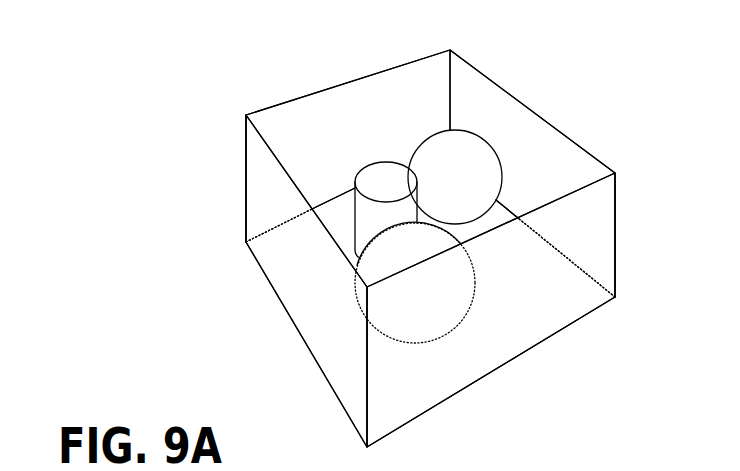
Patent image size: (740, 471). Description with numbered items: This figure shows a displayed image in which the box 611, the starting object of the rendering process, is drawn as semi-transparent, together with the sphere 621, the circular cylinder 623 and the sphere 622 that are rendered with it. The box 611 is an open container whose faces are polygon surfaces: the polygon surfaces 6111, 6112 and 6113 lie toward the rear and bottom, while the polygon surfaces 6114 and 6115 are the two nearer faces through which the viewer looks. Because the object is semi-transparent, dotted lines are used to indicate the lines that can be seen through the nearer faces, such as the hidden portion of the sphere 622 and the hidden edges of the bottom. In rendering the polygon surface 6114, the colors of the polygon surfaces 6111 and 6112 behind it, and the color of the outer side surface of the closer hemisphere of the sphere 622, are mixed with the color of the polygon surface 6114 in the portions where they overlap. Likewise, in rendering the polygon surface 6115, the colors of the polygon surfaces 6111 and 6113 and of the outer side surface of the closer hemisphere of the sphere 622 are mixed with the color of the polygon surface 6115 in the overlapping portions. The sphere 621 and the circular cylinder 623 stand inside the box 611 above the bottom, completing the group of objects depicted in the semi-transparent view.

The box 611 is at (485, 26).
The polygon surface 6111 is at (333, 218).
The polygon surface 6112 is at (402, 84).
The polygon surface 6113 is at (573, 100).
The polygon surface 6114 is at (288, 295).
The polygon surface 6115 is at (563, 315).
The sphere 621 is at (467, 143).
The sphere 622 is at (388, 262).
The circular cylinder 623 is at (372, 175).